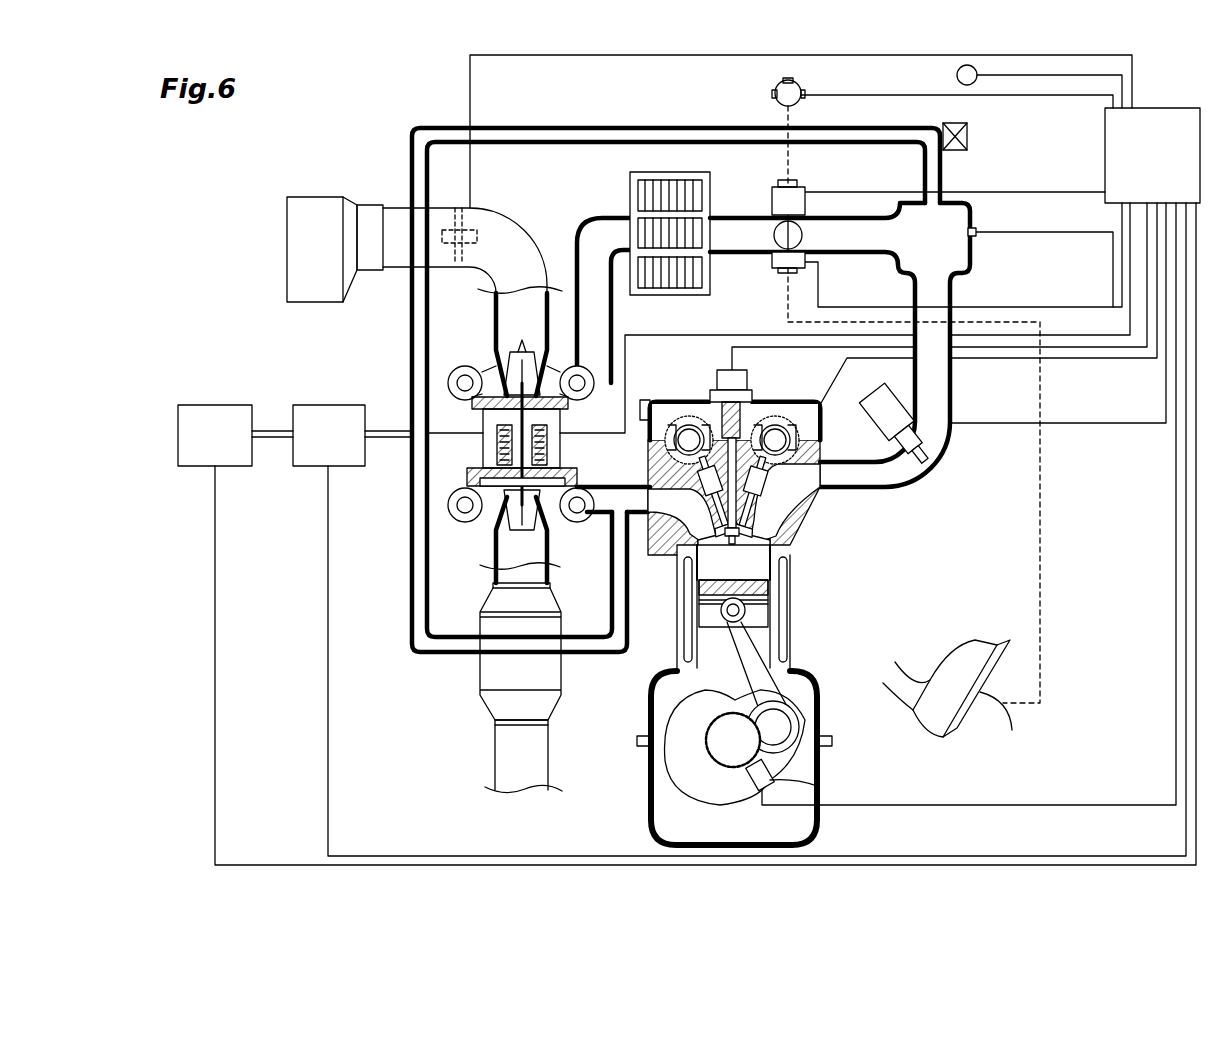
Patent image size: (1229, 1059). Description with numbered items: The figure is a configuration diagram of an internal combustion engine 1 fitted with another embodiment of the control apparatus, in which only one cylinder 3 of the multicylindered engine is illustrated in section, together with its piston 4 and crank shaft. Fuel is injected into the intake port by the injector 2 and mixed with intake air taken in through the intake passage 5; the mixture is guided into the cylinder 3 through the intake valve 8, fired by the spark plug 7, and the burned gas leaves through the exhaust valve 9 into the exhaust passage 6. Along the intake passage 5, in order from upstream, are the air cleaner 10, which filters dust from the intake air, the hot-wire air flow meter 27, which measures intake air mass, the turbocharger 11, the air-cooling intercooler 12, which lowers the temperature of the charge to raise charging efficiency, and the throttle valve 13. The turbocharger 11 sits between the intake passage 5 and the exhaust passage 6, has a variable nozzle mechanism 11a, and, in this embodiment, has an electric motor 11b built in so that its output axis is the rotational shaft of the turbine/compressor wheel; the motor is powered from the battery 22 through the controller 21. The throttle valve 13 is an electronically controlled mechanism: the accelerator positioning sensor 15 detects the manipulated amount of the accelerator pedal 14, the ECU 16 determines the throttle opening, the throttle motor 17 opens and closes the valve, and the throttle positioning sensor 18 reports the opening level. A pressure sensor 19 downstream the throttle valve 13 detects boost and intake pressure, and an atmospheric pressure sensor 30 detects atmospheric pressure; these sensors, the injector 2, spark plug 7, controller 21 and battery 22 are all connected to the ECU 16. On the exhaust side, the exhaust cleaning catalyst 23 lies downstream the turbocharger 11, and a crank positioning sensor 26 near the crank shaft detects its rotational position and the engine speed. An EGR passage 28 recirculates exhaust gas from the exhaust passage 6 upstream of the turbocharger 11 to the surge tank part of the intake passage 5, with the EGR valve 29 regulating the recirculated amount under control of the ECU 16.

The engine 1 is at (788, 607).
The injector 2 is at (852, 430).
The cylinder 3 is at (708, 573).
The piston 4 is at (765, 606).
The intake passage 5 is at (927, 452).
The exhaust passage 6 is at (606, 512).
The spark plug 7 is at (776, 590).
The intake valve 8 is at (790, 536).
The exhaust valve 9 is at (690, 541).
The air cleaner 10 is at (317, 293).
The turbocharger 11 is at (477, 432).
The variable nozzle mechanism 11a is at (477, 482).
The electric motor 11b is at (497, 445).
The intercooler 12 is at (670, 283).
The throttle valve 13 is at (776, 232).
The accelerator pedal 14 is at (968, 718).
The accelerator positioning sensor 15 is at (790, 270).
The ECU 16 is at (1160, 106).
The throttle motor 17 is at (798, 190).
The throttle positioning sensor 18 is at (802, 92).
The pressure sensor 19 is at (978, 236).
The controller 21 is at (310, 458).
The battery 22 is at (200, 458).
The exhaust cleaning catalyst 23 is at (480, 681).
The crank positioning sensor 26 is at (812, 783).
The air flow meter 27 is at (480, 232).
The EGR passage 28 is at (572, 126).
The EGR valve 29 is at (965, 127).
The atmospheric pressure sensor 30 is at (957, 76).